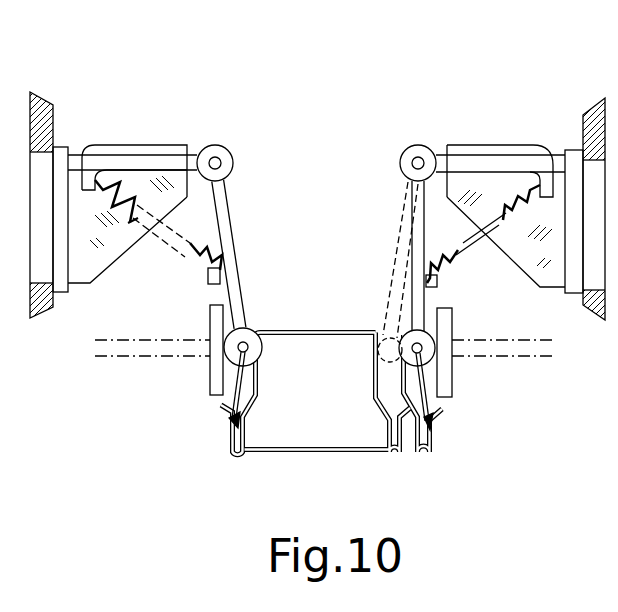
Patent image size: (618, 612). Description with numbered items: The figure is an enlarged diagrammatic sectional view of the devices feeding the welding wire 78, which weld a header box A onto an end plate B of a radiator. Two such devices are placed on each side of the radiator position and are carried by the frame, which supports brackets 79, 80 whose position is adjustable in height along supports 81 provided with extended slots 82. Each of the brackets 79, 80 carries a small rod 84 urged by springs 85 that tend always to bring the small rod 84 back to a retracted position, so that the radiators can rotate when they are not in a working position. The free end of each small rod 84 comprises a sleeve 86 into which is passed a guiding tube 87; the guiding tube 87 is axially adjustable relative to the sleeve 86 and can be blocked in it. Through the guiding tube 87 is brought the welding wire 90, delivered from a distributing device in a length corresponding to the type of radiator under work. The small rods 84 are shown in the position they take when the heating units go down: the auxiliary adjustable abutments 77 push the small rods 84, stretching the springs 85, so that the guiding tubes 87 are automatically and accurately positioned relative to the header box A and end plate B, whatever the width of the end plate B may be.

The auxiliary adjustable abutment 77 is at (153, 355).
The welding wire feeding device 78 is at (325, 150).
The bracket 79 is at (137, 188).
The bracket 80 is at (487, 178).
The support 81 is at (55, 108).
The extended slot 82 is at (42, 182).
The small rod 84 is at (282, 224).
The spring 85 is at (178, 247).
The sleeve 86 is at (247, 332).
The guiding tube 87 is at (227, 342).
The welding wire 90 is at (237, 353).
The header box A is at (298, 328).
The end plate B is at (227, 437).